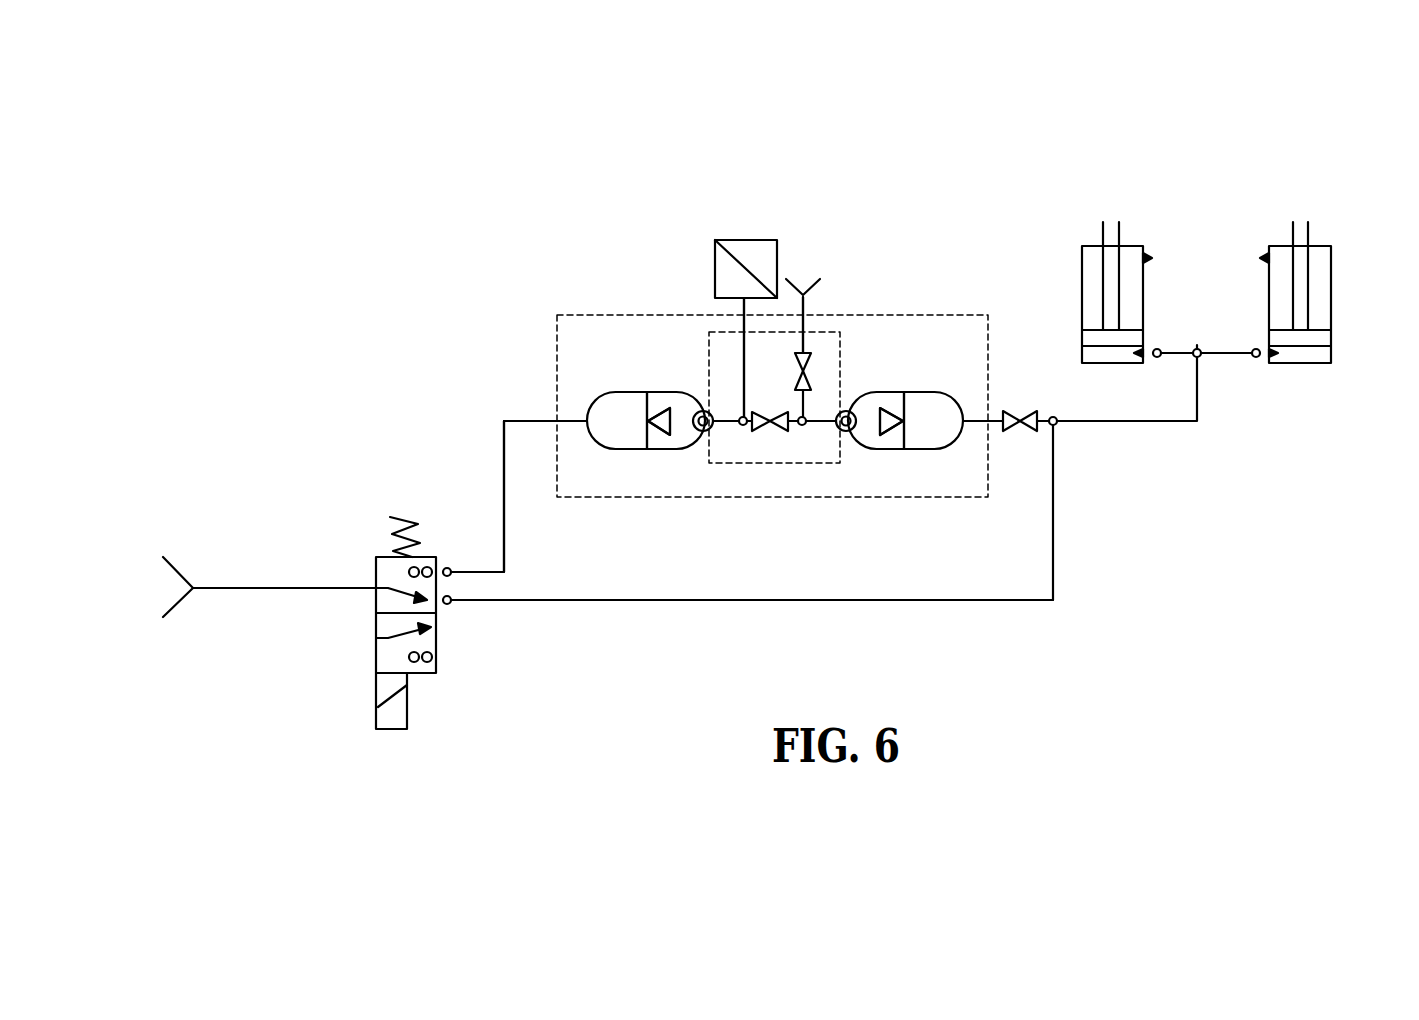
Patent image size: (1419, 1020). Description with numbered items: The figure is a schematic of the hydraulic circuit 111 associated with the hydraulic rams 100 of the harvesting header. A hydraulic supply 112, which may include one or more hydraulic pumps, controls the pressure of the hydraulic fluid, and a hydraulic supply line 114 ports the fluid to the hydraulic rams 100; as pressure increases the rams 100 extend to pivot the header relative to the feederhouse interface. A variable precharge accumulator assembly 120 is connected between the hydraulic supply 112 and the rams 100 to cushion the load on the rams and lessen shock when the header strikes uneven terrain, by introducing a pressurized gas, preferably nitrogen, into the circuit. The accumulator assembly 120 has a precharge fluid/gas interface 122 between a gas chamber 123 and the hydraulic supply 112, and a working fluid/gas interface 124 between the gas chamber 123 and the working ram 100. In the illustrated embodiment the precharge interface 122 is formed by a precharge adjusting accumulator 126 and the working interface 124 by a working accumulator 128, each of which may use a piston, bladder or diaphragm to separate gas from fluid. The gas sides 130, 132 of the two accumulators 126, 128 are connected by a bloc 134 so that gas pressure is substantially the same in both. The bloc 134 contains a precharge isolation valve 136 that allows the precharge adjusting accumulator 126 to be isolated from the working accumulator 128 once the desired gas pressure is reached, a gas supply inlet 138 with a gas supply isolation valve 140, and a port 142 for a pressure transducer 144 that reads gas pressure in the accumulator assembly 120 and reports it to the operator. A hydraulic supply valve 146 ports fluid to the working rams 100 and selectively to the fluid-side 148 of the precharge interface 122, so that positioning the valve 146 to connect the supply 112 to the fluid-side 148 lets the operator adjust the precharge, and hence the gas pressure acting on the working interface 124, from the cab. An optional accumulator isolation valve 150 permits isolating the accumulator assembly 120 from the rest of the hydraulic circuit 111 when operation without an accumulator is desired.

The hydraulic ram 100 is at (1143, 293).
The hydraulic circuit 111 is at (410, 203).
The hydraulic supply 112 is at (185, 606).
The hydraulic supply line 114 is at (512, 602).
The variable precharge accumulator assembly 120 is at (968, 315).
The precharge fluid/gas interface 122 is at (643, 406).
The gas chamber 123 is at (677, 392).
The working fluid/gas interface 124 is at (905, 408).
The precharge adjusting accumulator 126 is at (623, 450).
The working accumulator 128 is at (918, 450).
The gas side of precharge adjusting accumulator 130 is at (699, 432).
The gas side of working accumulator 132 is at (850, 432).
The bloc 134 is at (816, 333).
The precharge isolation valve 136 is at (775, 432).
The gas supply inlet 138 is at (812, 283).
The gas supply isolation valve 140 is at (812, 362).
The port 142 is at (742, 360).
The pressure transducer 144 is at (738, 240).
The hydraulic supply valve 146 is at (380, 638).
The fluid-side of precharge fluid/gas interface 148 is at (585, 420).
The accumulator isolation valve 150 is at (1013, 431).